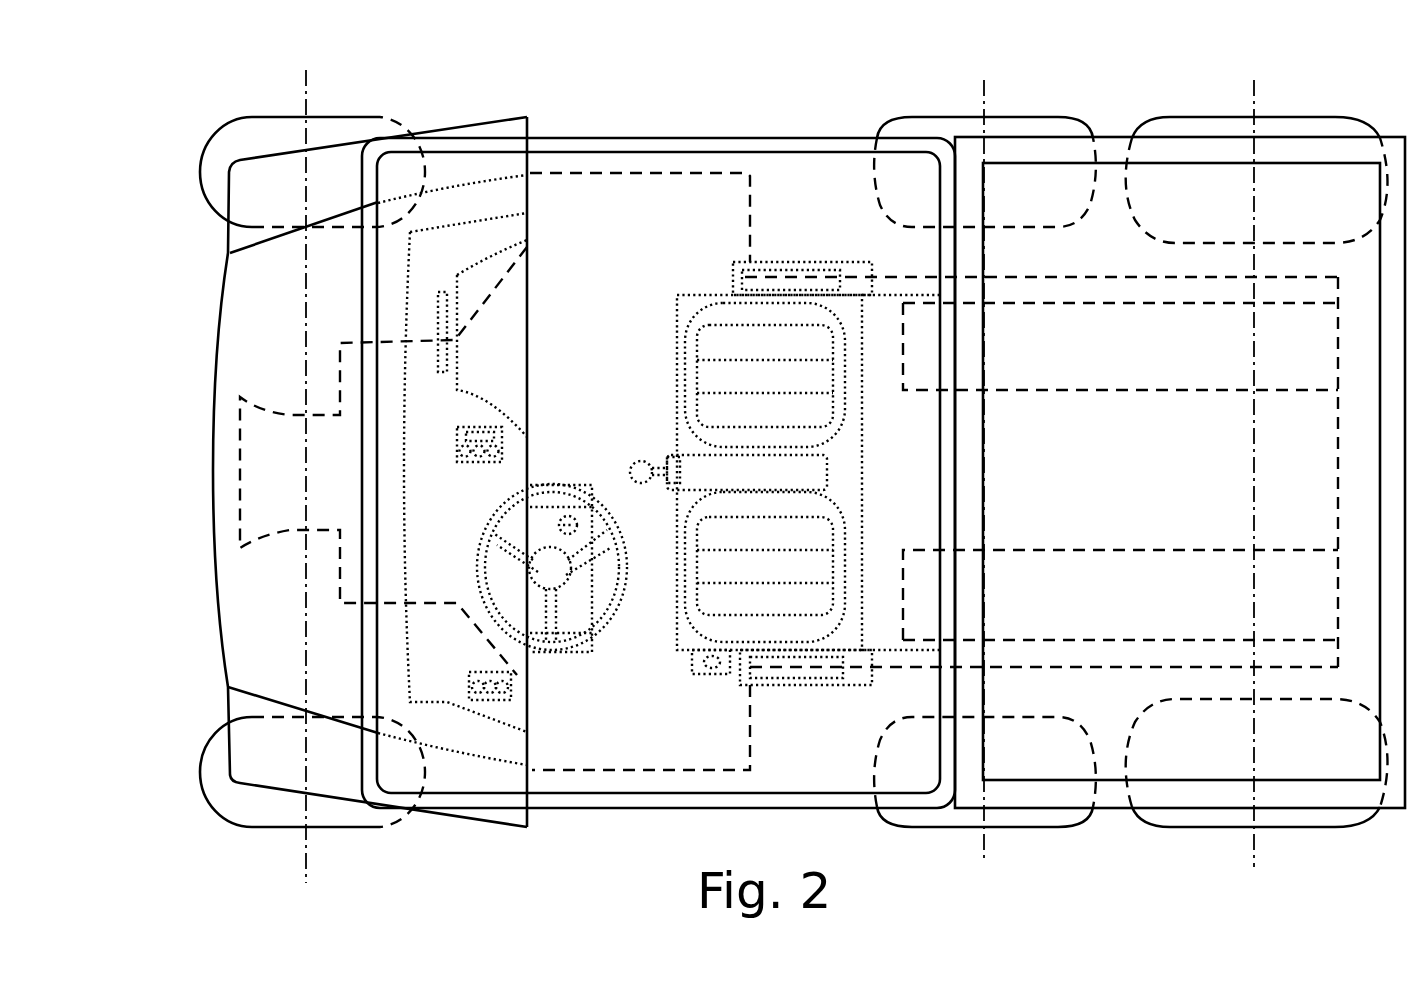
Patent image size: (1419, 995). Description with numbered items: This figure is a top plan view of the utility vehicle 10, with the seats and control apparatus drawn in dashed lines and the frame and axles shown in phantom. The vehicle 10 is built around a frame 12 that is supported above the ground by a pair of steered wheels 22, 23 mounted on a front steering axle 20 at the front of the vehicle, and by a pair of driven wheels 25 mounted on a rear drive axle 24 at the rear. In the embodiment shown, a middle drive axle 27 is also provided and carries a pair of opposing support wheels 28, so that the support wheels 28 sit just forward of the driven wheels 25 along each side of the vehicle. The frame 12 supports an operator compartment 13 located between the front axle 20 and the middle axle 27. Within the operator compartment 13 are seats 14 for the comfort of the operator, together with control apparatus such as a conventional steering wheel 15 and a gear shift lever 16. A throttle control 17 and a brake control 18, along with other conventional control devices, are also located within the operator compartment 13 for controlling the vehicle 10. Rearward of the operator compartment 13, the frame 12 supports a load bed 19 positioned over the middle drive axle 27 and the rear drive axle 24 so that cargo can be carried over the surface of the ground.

The utility vehicle 10 is at (389, 90).
The frame 12 is at (691, 173).
The operator compartment 13 is at (633, 118).
The seats 14 is at (707, 300).
The steering wheel 15 is at (567, 482).
The gear shift lever 16 is at (641, 460).
The throttle control 17 is at (492, 427).
The brake control 18 is at (513, 690).
The load bed 19 is at (1380, 672).
The front steering axle 20 is at (307, 185).
The steered wheel 22 is at (413, 197).
The steered wheel 23 is at (332, 828).
The rear drive axle 24 is at (1257, 197).
The driven wheels 25 is at (1187, 113).
The middle drive axle 27 is at (983, 233).
The support wheels 28 is at (1030, 117).